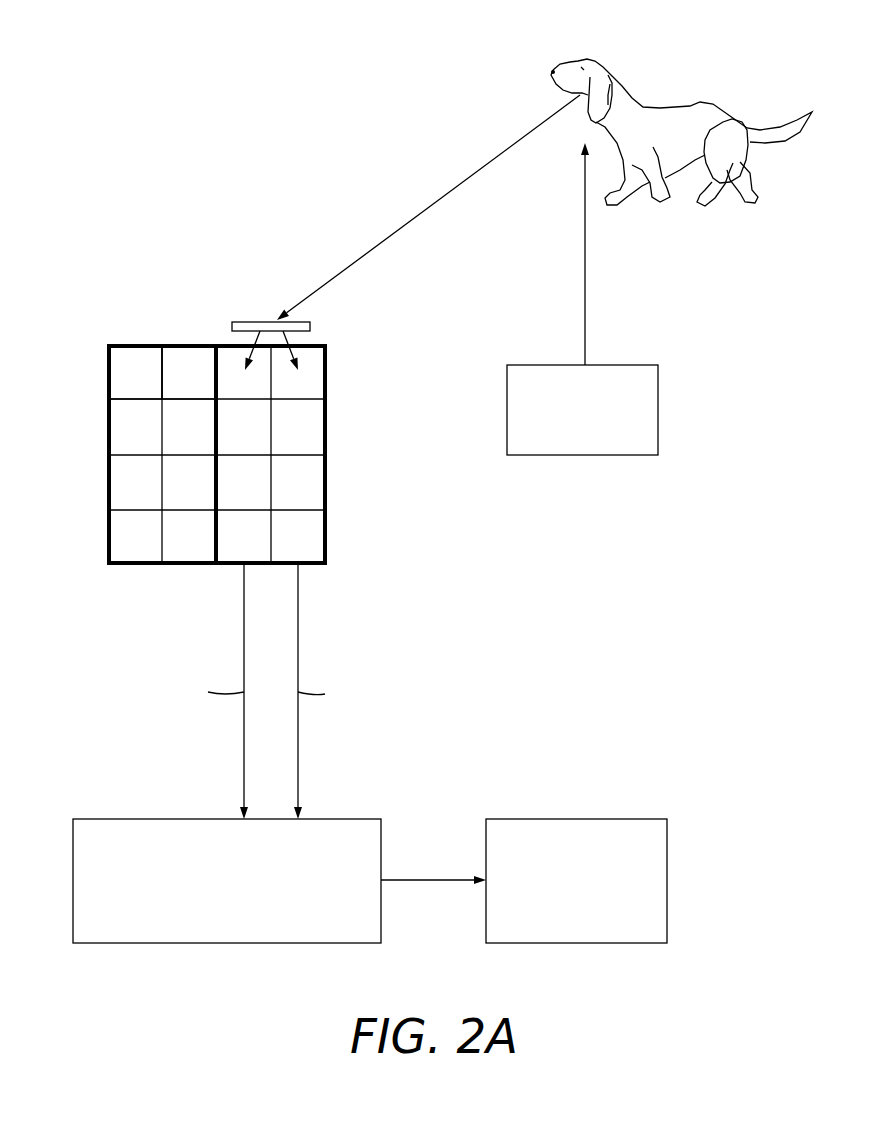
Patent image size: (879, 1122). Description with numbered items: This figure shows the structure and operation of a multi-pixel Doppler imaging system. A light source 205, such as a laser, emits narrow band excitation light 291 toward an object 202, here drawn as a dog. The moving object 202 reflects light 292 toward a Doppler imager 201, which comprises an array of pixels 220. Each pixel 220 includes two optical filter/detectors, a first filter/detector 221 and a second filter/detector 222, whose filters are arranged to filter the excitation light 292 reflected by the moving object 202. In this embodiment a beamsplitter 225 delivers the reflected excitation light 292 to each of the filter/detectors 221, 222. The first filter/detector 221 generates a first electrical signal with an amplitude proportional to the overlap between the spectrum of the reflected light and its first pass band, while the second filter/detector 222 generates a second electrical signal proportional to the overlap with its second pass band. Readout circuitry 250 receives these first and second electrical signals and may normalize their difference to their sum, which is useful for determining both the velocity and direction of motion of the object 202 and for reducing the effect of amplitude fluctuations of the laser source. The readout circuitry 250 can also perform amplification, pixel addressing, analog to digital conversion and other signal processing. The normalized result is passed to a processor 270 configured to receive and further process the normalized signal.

The Doppler imager 201 is at (108, 264).
The object 202 is at (681, 79).
The light source 205 is at (658, 408).
The pixel 220 is at (160, 343).
The first filter/detector 221 is at (125, 373).
The second filter/detector 222 is at (187, 343).
The beamsplitter 225 is at (310, 319).
The readout circuitry 250 is at (145, 817).
The processor 270 is at (592, 818).
The excitation light 291 is at (585, 285).
The reflected excitation light 292 is at (458, 183).